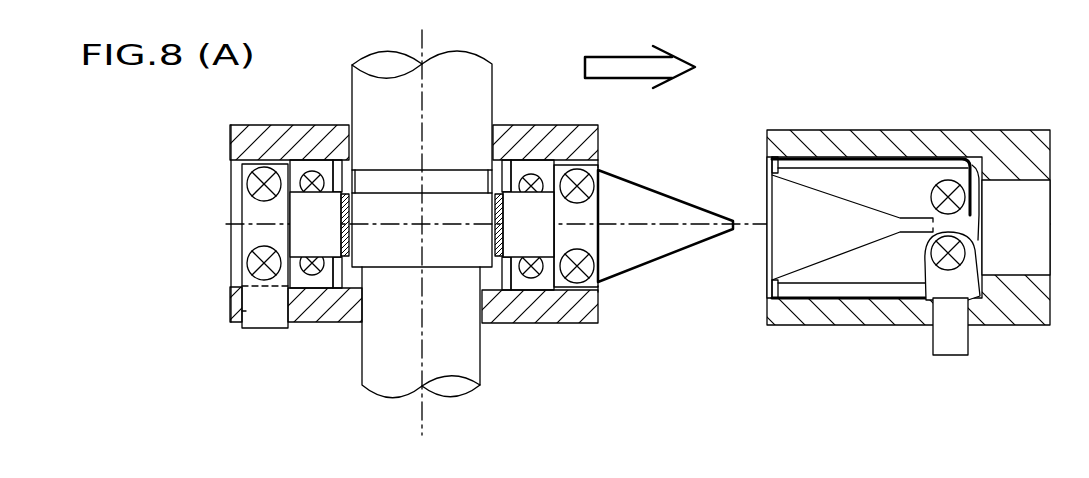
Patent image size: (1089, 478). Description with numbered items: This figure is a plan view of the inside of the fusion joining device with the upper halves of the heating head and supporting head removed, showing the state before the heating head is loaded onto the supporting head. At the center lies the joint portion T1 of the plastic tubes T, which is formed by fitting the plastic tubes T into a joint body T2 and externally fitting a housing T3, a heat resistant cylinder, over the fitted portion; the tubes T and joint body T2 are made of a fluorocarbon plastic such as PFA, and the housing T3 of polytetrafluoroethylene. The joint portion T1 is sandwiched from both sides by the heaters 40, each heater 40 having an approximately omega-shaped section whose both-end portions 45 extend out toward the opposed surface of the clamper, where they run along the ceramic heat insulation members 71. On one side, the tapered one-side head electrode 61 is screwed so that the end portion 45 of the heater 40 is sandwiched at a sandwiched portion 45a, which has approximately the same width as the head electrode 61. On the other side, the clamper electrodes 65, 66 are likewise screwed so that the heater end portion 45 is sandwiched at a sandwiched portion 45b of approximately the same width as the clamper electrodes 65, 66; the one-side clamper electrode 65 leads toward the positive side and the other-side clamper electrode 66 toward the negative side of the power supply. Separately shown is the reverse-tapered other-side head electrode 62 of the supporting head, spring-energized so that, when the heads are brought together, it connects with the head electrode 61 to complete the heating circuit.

The both-end portion 45 is at (298, 200).
The heater 40 is at (542, 207).
The heat insulation member 71 is at (300, 282).
The one-side clamper electrode 65 is at (384, 276).
The other-side clamper electrode 66 is at (420, 225).
The sandwiched portion 45a is at (598, 242).
The sandwiched portion 45b is at (242, 311).
The one-side head electrode 61 is at (679, 198).
The other-side head electrode 62 is at (826, 202).
The plastic tube T is at (473, 357).
The joint portion T1 is at (383, 258).
The joint body T2 is at (472, 99).
The housing T3 is at (408, 258).